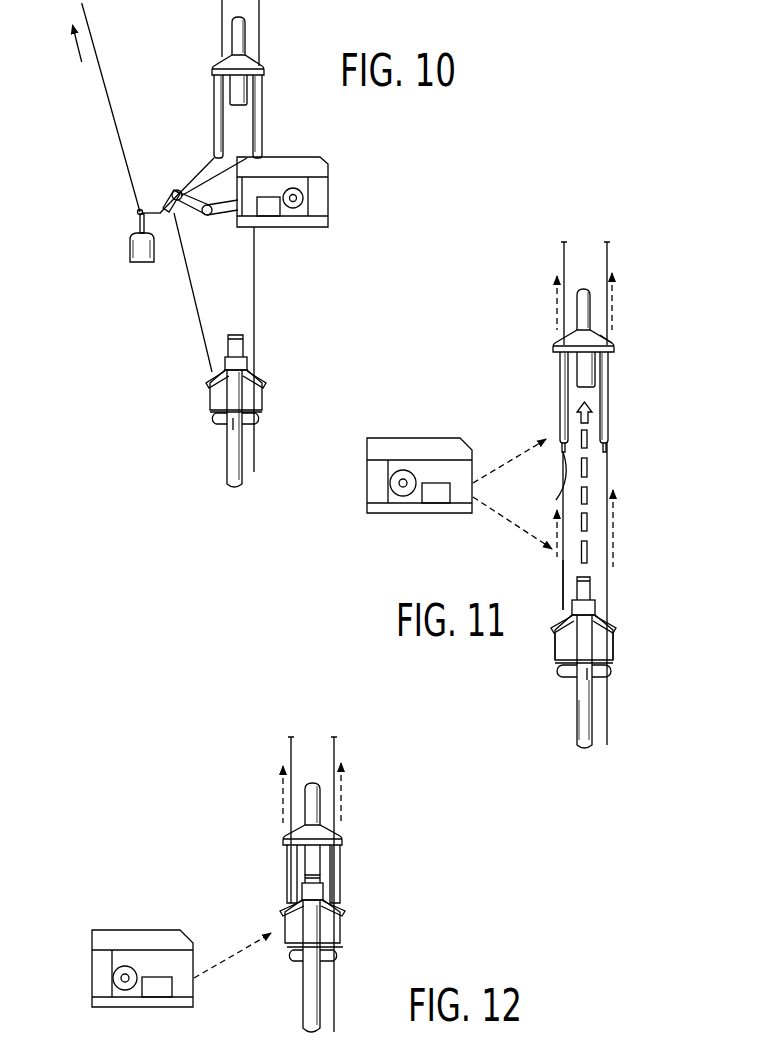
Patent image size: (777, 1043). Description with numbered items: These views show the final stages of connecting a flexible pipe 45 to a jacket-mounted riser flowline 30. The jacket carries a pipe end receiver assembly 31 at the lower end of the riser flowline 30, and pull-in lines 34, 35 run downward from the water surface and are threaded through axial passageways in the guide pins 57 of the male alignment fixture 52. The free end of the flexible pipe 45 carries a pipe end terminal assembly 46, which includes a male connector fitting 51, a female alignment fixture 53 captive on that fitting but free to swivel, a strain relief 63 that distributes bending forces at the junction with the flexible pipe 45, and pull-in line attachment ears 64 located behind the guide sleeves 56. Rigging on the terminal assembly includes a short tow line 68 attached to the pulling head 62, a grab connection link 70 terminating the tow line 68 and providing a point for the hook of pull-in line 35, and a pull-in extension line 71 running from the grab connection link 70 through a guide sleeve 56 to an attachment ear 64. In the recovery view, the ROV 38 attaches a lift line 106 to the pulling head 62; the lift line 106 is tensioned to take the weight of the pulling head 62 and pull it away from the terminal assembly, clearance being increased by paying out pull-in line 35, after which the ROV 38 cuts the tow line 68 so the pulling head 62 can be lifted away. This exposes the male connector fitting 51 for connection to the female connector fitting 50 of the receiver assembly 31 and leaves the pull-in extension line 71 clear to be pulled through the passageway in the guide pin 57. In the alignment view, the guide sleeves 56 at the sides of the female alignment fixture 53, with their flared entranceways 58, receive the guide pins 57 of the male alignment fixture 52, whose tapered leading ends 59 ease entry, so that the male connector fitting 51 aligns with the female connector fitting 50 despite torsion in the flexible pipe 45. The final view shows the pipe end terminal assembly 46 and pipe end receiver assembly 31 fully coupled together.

In FIG. 10, the lift line 106 is at (108, 97).
In FIG. 11, the riser flowline 30 is at (592, 303).
In FIG. 10, the pipe end receiver assembly 31 is at (266, 64).
In FIG. 11, the pipe end receiver assembly 31 is at (549, 346).
In FIG. 12, the pipe end receiver assembly 31 is at (346, 838).
In FIG. 10, the pull-in line 34 is at (256, 297).
In FIG. 11, the pull-in line 34 is at (608, 262).
In FIG. 12, the pull-in line 34 is at (336, 755).
In FIG. 10, the pull-in line 35 is at (203, 173).
In FIG. 11, the pull-in line 35 is at (562, 262).
In FIG. 12, the pull-in line 35 is at (289, 755).
In FIG. 10, the ROV 38 is at (328, 168).
In FIG. 11, the ROV 38 is at (420, 438).
In FIG. 12, the ROV 38 is at (160, 930).
In FIG. 11, the flexible pipe 45 is at (577, 734).
In FIG. 12, the flexible pipe 45 is at (303, 1005).
In FIG. 10, the pipe end terminal assembly 46 is at (266, 369).
In FIG. 11, the pipe end terminal assembly 46 is at (640, 594).
In FIG. 12, the pipe end terminal assembly 46 is at (346, 923).
In FIG. 11, the female connector fitting 50 is at (586, 377).
In FIG. 11, the male connector fitting 51 is at (588, 588).
In FIG. 11, the male alignment fixture 52 is at (614, 347).
In FIG. 11, the female alignment fixture 53 is at (556, 661).
In FIG. 11, the guide sleeves 56 is at (556, 648).
In FIG. 11, the guide pins 57 is at (559, 412).
In FIG. 11, the flared entranceways 58 is at (557, 625).
In FIG. 11, the tapered leading ends 59 is at (562, 449).
In FIG. 10, the pulling head 62 is at (143, 268).
In FIG. 10, the strain relief 63 is at (234, 420).
In FIG. 11, the strain relief 63 is at (587, 670).
In FIG. 10, the pull-in line attachment ears 64 is at (213, 420).
In FIG. 11, the pull-in line attachment ears 64 is at (567, 678).
In FIG. 10, the tow line 68 is at (143, 212).
In FIG. 10, the grab connection link 70 is at (181, 215).
In FIG. 11, the grab connection link 70 is at (556, 500).
In FIG. 10, the pull-in extension line 71 is at (202, 333).
In FIG. 11, the pull-in extension line 71 is at (562, 576).